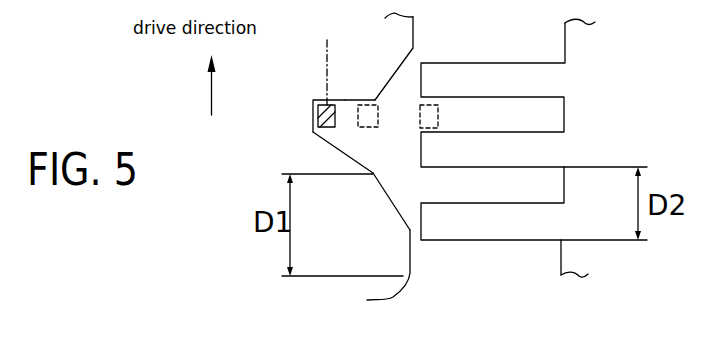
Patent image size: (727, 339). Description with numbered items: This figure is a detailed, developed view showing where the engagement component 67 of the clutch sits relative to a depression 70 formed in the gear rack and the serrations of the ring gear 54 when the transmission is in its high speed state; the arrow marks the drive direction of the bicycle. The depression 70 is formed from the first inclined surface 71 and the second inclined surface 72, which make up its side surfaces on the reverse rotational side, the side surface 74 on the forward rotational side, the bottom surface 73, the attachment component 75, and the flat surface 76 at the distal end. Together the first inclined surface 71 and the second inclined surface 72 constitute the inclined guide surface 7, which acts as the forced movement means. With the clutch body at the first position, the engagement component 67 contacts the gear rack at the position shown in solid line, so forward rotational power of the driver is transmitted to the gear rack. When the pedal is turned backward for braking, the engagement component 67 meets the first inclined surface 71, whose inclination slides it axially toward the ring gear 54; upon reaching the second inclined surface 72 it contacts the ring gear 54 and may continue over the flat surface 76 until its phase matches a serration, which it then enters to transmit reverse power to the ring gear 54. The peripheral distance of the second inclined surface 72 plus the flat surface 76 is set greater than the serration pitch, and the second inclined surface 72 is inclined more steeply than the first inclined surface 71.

The inclined guide surface 7 is at (378, 154).
The ring gear 54 is at (535, 148).
The engagement component 67 is at (313, 116).
The depression 70 is at (396, 102).
The first inclined surface 71 is at (340, 150).
The second inclined surface 72 is at (392, 200).
The bottom surface 73 is at (313, 101).
The side surface 74 is at (366, 100).
The attachment component 75 is at (405, 53).
The flat surface 76 is at (411, 262).